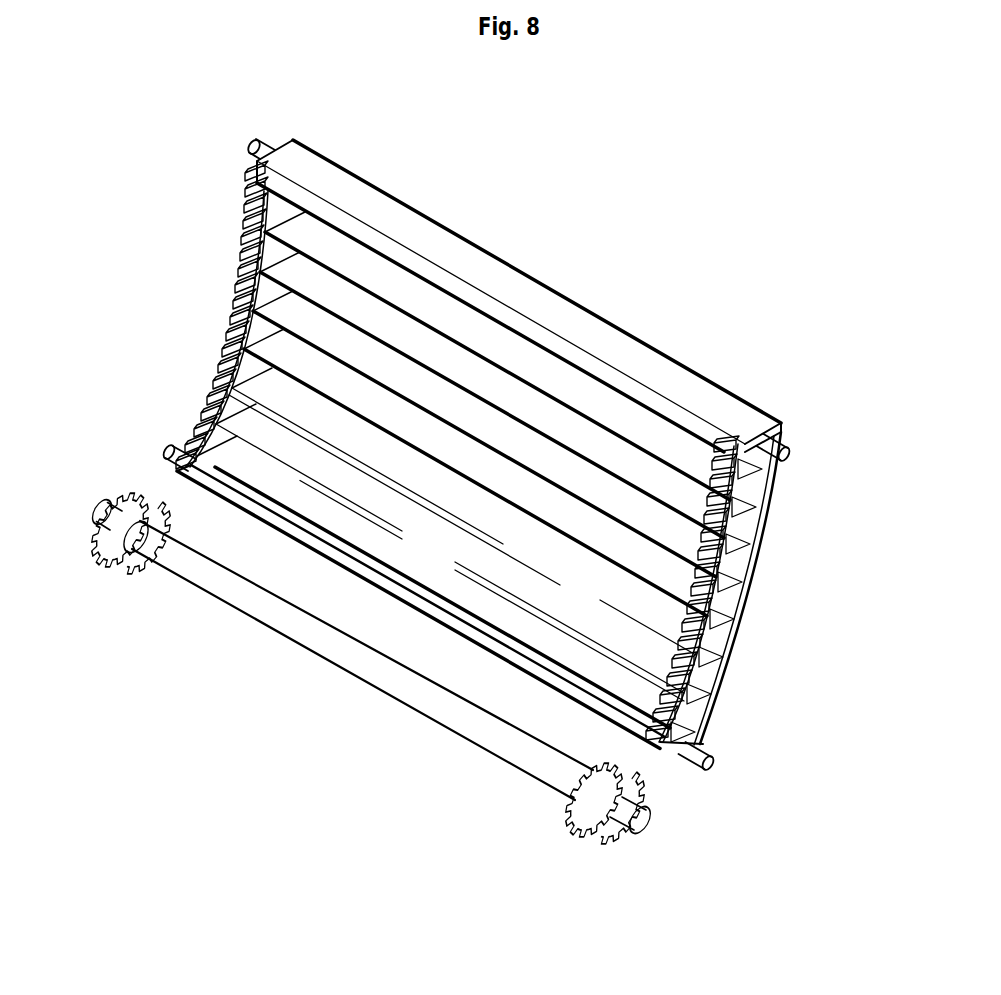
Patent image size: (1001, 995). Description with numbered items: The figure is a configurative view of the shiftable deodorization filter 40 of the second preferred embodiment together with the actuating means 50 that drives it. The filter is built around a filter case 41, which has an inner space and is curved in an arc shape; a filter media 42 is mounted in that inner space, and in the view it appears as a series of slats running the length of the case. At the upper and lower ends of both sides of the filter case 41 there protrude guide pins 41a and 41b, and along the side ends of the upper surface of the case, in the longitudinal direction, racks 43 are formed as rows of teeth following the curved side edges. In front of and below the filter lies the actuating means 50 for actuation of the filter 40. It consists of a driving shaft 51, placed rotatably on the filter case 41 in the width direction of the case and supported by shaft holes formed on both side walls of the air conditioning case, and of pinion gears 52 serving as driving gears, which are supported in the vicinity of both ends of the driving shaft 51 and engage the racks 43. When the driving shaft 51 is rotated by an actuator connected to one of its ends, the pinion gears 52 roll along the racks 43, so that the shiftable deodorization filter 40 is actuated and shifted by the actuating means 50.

The shiftable deodorization filter 40 is at (214, 233).
The filter case 41 is at (621, 327).
The guide pin 41a is at (258, 146).
The guide pin 41b is at (166, 440).
The filter media 42 is at (430, 357).
The rack 43 is at (217, 322).
The actuating means 50 is at (92, 503).
The driving shaft 51 is at (314, 637).
The pinion gear 52 is at (105, 555).